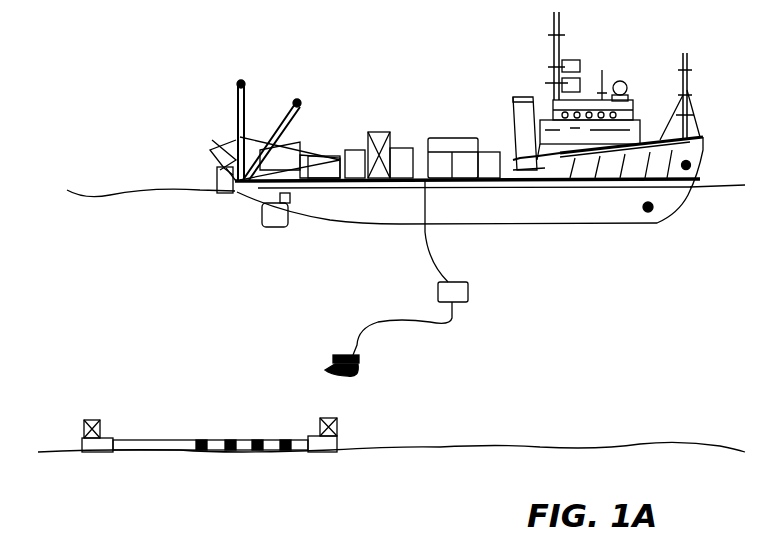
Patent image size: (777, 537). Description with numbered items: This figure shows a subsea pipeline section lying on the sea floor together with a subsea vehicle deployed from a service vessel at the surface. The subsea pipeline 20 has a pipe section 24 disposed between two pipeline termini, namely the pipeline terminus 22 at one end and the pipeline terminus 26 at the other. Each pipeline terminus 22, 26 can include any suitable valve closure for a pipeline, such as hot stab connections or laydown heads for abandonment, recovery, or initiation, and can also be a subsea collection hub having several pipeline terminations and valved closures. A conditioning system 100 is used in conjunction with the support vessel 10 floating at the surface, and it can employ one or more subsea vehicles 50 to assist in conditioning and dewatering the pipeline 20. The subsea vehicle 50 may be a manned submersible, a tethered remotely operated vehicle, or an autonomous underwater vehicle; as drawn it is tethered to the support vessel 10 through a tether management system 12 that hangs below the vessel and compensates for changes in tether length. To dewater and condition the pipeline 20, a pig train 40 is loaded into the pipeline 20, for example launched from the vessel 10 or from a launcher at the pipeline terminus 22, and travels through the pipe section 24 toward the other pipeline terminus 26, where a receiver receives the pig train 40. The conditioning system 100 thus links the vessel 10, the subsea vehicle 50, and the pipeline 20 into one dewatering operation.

The support vessel 10 is at (487, 127).
The tether management system 12 is at (470, 290).
The subsea pipeline 20 is at (157, 415).
The pipeline terminus 22 is at (83, 441).
The pipe section 24 is at (124, 452).
The pipeline terminus 26 is at (338, 441).
The pig train 40 is at (290, 455).
The subsea vehicle 50 is at (332, 350).
The conditioning system 100 is at (145, 296).